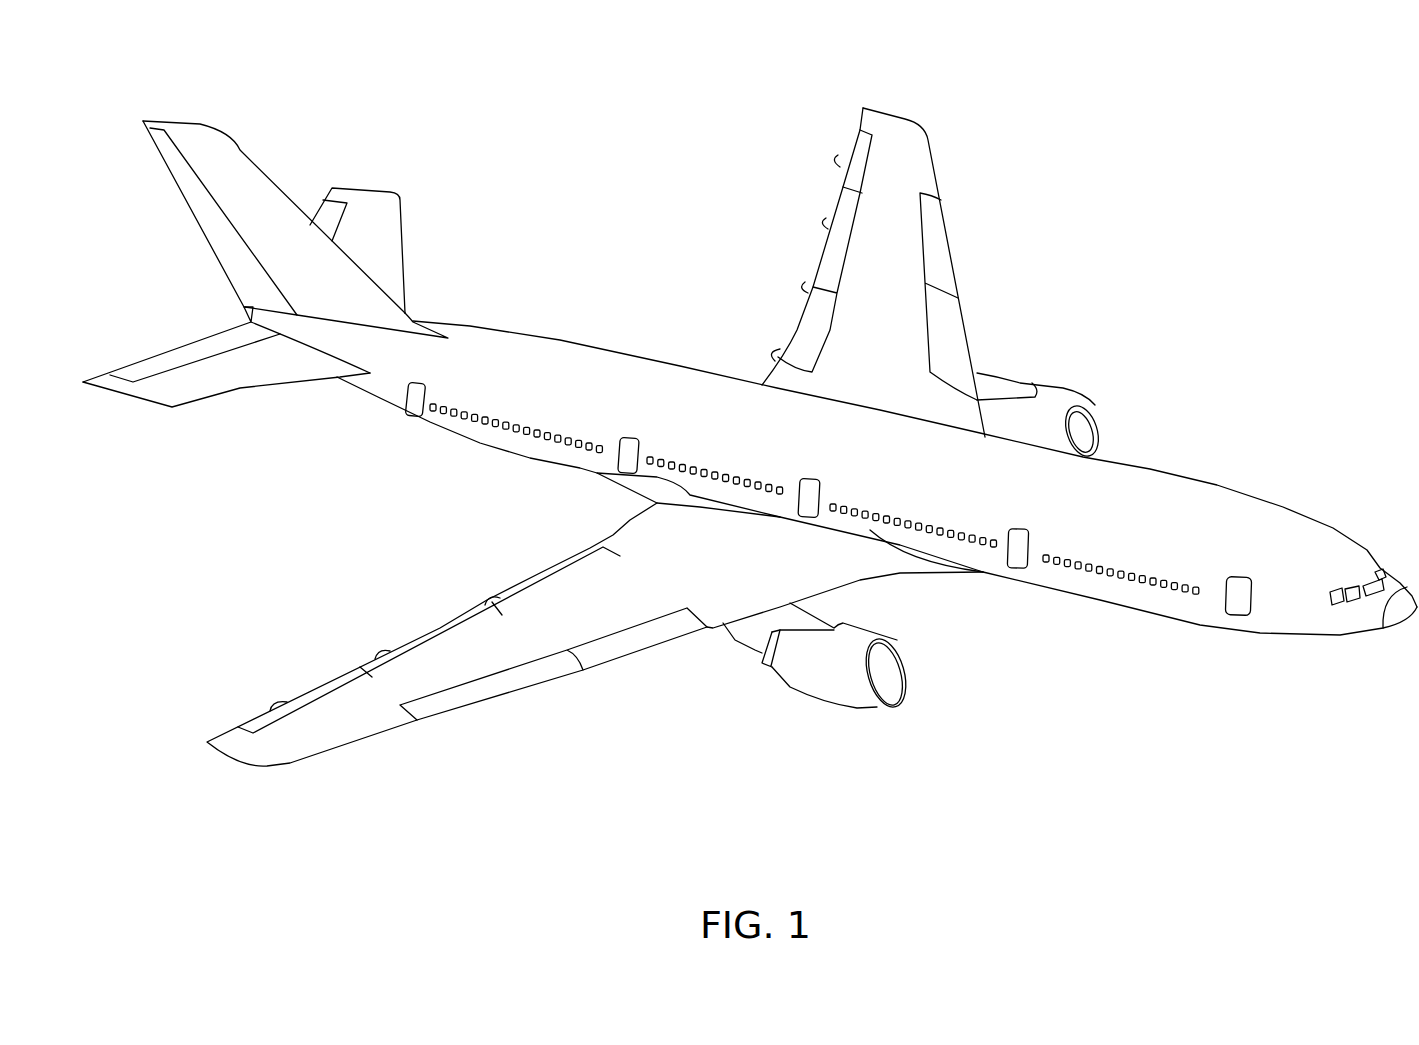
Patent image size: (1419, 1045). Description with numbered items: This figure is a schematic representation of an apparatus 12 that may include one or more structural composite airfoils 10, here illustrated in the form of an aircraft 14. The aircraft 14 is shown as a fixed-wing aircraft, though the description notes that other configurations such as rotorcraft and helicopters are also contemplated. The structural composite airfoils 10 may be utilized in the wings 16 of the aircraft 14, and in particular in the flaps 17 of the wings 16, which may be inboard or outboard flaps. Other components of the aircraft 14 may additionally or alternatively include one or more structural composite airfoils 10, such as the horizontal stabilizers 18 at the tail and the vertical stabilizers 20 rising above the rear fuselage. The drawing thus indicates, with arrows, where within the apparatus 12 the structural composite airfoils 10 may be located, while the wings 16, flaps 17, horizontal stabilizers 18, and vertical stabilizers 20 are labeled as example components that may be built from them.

The structural composite airfoil 10 is at (1093, 222).
The apparatus 12 is at (750, 438).
The aircraft 14 is at (1358, 333).
The wing 16 is at (897, 118).
The flap 17 is at (830, 240).
The horizontal stabilizer 18 is at (393, 247).
The vertical stabilizer 20 is at (238, 158).